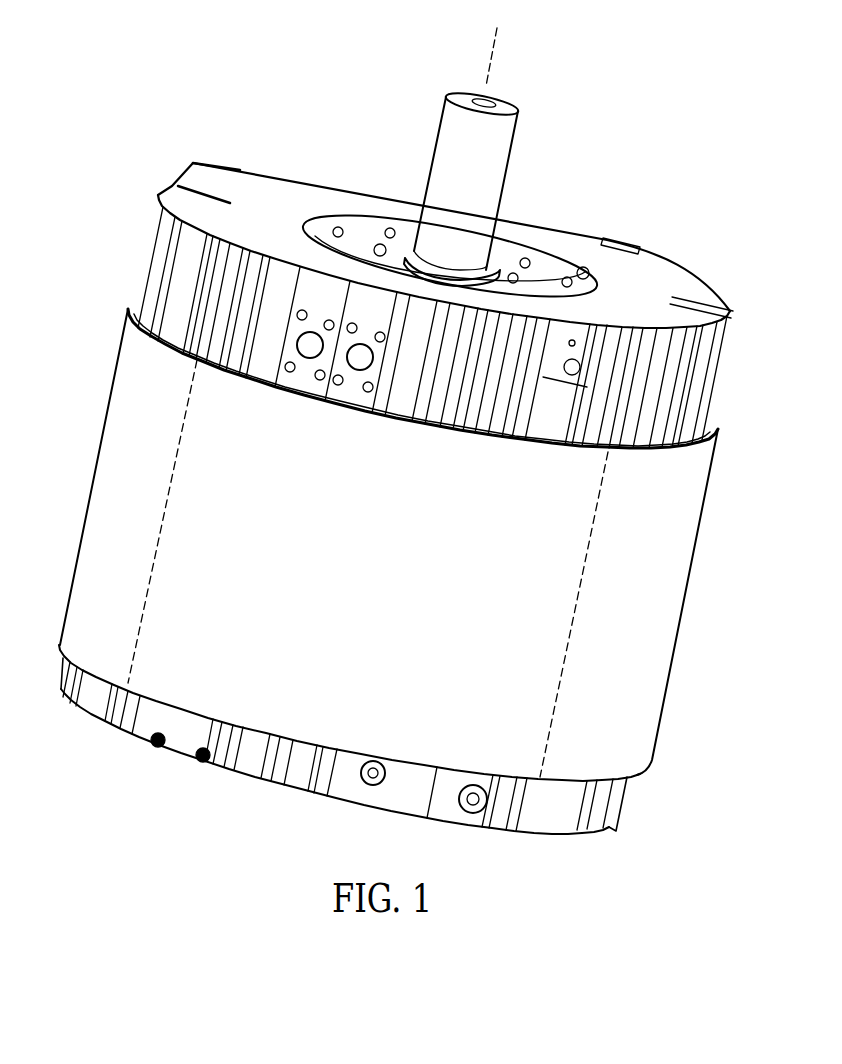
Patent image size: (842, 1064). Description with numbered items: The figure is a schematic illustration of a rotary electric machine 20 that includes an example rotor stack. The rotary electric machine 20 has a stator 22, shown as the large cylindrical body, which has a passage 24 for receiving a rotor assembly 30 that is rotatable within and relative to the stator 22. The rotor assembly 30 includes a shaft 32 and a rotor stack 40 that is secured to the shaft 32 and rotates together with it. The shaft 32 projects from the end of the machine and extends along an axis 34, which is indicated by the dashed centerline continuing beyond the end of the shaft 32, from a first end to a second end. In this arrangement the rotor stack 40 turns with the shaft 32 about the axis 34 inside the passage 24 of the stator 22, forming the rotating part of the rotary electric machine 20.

The rotary electric machine 20 is at (662, 184).
The stator 22 is at (690, 492).
The passage 24 is at (622, 306).
The rotor assembly 30 is at (355, 240).
The shaft 32 is at (495, 155).
The axis 34 is at (496, 52).
The rotor stack 40 is at (560, 594).